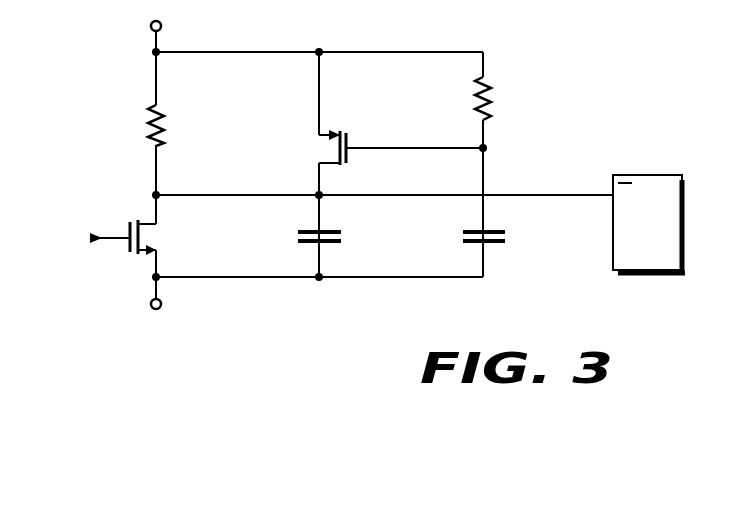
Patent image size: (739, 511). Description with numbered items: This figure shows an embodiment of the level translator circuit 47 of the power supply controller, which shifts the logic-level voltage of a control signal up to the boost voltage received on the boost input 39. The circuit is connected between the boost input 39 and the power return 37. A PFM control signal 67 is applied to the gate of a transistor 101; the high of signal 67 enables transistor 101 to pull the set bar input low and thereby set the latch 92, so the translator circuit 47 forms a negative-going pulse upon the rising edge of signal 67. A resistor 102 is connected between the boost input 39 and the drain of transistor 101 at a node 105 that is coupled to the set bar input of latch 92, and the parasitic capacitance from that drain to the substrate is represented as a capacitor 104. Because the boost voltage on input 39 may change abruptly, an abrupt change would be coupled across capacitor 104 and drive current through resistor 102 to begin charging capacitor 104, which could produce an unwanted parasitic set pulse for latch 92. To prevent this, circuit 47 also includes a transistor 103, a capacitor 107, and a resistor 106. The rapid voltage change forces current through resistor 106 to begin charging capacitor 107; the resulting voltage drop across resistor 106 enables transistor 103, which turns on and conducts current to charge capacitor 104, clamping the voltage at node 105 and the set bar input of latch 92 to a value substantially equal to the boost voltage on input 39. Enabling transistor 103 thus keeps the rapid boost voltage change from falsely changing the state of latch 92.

The boost input 39 is at (150, 26).
The power return 37 is at (150, 304).
The level translator circuit 47 is at (336, 353).
The PFM control signal 67 is at (90, 240).
The latch 92 is at (645, 175).
The transistor 101 is at (126, 223).
The resistor 102 is at (145, 128).
The transistor 103 is at (318, 148).
The capacitor 104 is at (295, 234).
The node 105 is at (160, 195).
The resistor 106 is at (497, 94).
The capacitor 107 is at (460, 234).